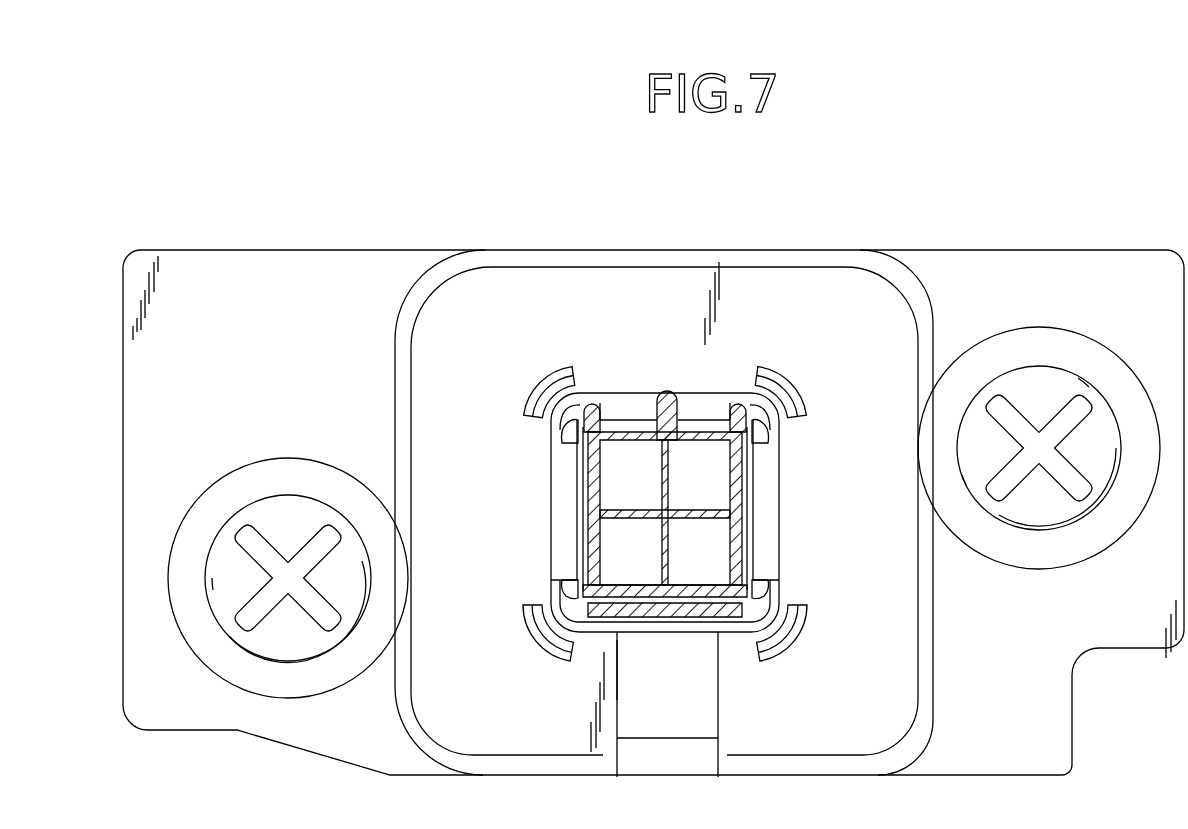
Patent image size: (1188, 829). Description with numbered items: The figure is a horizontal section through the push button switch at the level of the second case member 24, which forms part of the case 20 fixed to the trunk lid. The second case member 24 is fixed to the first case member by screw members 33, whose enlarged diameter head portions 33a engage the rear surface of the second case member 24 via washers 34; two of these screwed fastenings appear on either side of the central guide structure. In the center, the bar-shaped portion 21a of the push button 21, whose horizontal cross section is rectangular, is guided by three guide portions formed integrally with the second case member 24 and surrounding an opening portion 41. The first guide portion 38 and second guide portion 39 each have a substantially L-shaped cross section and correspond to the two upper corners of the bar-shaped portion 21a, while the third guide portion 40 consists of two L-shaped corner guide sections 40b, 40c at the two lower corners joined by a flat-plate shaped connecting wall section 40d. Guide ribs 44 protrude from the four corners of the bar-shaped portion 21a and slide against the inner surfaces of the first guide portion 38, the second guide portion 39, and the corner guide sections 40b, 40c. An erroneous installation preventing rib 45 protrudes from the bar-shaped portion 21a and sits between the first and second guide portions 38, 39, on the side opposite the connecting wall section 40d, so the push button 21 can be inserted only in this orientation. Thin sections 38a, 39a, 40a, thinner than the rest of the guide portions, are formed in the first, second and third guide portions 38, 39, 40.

The case 20 is at (788, 247).
The second case member 24 is at (1005, 268).
The screw member 33 is at (252, 653).
The enlarged diameter head portion 33a is at (300, 513).
The washer 34 is at (235, 480).
The push button 21 is at (587, 518).
The bar-shaped portion 21a is at (740, 497).
The first guide portion 38 is at (548, 417).
The thin section 38a is at (574, 418).
The second guide portion 39 is at (780, 405).
The thin section 39a is at (737, 432).
The third guide portion 40 is at (702, 635).
The thin section 40a is at (647, 618).
The corner guide section 40b is at (546, 619).
The corner guide section 40c is at (786, 617).
The connecting wall section 40d is at (603, 636).
The opening portion 41 is at (695, 450).
The guide rib 44 is at (565, 437).
The erroneous installation preventing rib 45 is at (660, 398).